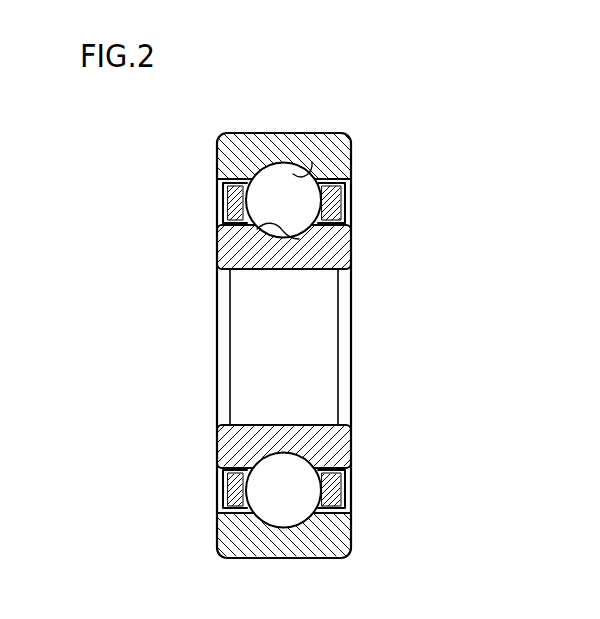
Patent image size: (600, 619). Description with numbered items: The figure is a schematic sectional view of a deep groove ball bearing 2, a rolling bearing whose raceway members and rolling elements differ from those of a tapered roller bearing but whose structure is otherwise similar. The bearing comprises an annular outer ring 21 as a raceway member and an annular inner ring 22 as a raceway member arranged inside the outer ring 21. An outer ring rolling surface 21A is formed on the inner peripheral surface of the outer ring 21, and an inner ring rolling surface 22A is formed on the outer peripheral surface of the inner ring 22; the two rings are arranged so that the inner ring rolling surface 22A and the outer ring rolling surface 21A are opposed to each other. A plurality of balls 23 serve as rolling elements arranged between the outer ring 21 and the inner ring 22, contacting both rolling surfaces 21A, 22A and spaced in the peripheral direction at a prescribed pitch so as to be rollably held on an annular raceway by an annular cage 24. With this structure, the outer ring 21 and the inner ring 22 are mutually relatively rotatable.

The deep groove ball bearing 2 is at (295, 313).
The outer ring 21 is at (333, 153).
The outer ring rolling surface 21A is at (312, 162).
The inner ring 22 is at (330, 245).
The inner ring rolling surface 22A is at (257, 229).
The balls 23 is at (265, 183).
The cage 24 is at (336, 197).